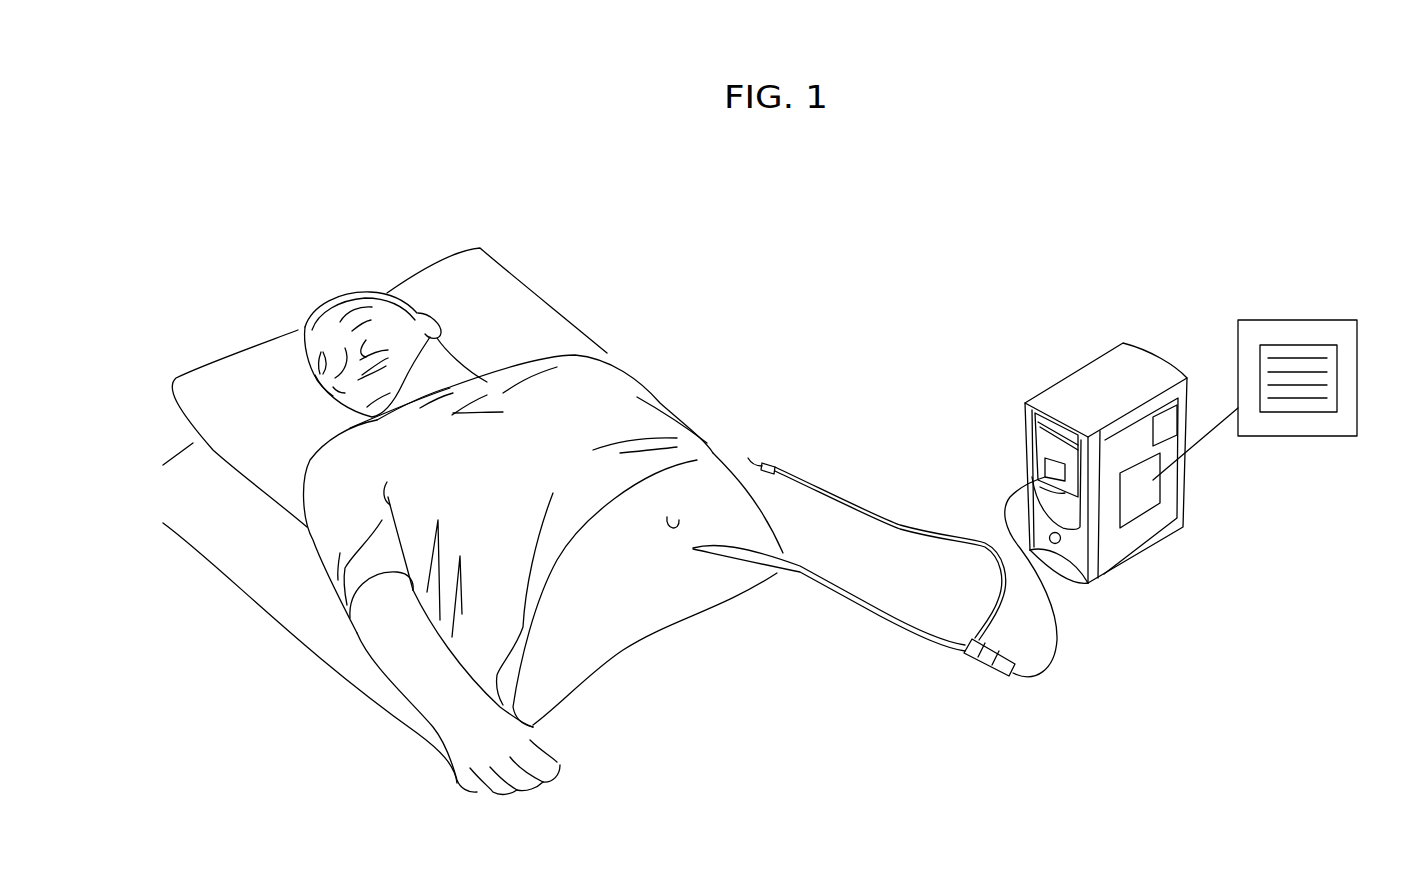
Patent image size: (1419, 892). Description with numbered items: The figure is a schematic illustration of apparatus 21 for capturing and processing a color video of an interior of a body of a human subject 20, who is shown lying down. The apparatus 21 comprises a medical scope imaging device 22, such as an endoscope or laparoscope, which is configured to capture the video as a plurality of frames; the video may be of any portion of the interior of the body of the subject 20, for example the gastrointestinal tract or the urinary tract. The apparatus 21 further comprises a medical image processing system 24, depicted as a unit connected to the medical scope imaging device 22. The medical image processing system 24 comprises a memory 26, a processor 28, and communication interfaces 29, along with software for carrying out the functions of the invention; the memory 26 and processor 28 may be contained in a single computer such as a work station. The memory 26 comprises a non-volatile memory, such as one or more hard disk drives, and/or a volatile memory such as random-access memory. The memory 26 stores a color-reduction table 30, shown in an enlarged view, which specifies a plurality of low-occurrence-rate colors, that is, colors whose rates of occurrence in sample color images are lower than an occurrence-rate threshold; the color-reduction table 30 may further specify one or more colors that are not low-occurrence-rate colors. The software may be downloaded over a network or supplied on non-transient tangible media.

The human subject 20 is at (288, 297).
The apparatus 21 is at (706, 331).
The medical scope imaging device 22 is at (877, 616).
The medical image processing system 24 is at (1092, 375).
The memory 26 is at (1152, 510).
The processor 28 is at (1165, 412).
The communication interfaces 29 is at (1050, 465).
The color-reduction table 30 is at (1303, 413).
The indicator I is at (1052, 470).